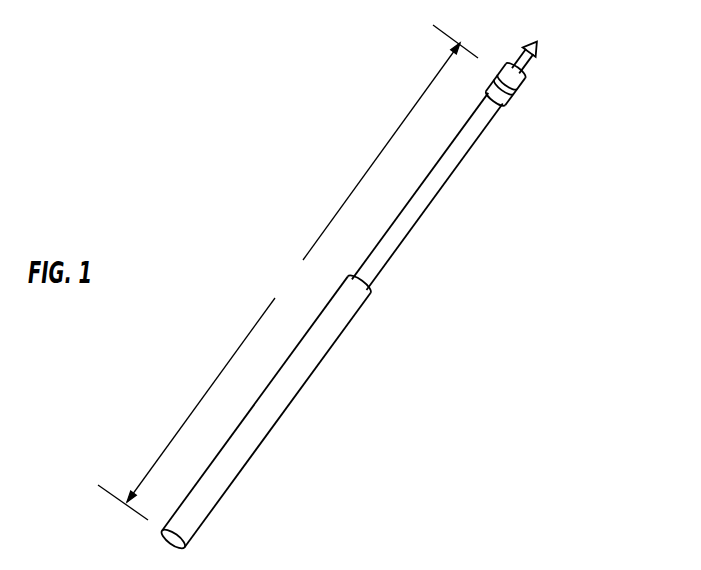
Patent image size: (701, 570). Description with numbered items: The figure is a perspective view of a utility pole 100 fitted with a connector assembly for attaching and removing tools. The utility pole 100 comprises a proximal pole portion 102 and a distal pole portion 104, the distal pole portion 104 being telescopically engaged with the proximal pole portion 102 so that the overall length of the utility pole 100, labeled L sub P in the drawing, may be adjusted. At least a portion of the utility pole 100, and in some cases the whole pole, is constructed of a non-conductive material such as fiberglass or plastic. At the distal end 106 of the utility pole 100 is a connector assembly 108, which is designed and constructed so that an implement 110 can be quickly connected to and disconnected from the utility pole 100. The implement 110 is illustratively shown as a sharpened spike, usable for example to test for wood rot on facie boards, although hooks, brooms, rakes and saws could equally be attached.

The utility pole 100 is at (231, 104).
The proximal pole portion 102 is at (248, 462).
The distal pole portion 104 is at (417, 222).
The distal end 106 is at (536, 135).
The connector assembly 108 is at (530, 90).
The implement 110 is at (539, 49).